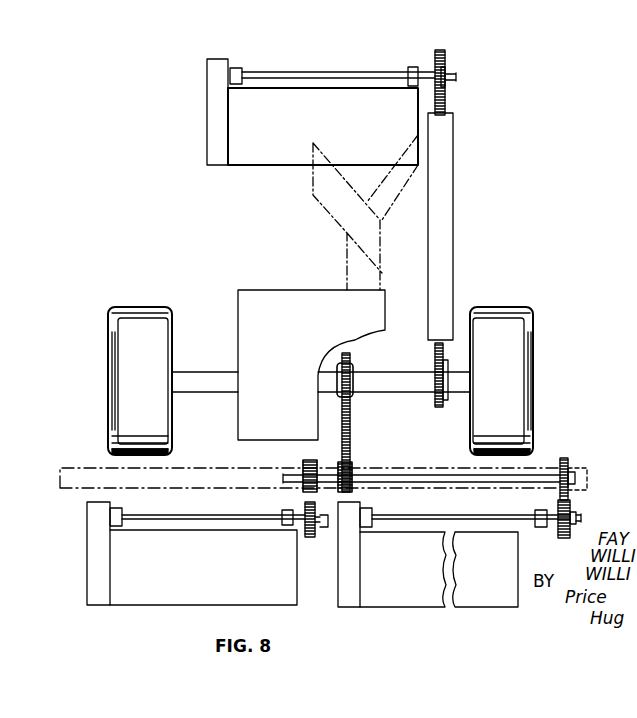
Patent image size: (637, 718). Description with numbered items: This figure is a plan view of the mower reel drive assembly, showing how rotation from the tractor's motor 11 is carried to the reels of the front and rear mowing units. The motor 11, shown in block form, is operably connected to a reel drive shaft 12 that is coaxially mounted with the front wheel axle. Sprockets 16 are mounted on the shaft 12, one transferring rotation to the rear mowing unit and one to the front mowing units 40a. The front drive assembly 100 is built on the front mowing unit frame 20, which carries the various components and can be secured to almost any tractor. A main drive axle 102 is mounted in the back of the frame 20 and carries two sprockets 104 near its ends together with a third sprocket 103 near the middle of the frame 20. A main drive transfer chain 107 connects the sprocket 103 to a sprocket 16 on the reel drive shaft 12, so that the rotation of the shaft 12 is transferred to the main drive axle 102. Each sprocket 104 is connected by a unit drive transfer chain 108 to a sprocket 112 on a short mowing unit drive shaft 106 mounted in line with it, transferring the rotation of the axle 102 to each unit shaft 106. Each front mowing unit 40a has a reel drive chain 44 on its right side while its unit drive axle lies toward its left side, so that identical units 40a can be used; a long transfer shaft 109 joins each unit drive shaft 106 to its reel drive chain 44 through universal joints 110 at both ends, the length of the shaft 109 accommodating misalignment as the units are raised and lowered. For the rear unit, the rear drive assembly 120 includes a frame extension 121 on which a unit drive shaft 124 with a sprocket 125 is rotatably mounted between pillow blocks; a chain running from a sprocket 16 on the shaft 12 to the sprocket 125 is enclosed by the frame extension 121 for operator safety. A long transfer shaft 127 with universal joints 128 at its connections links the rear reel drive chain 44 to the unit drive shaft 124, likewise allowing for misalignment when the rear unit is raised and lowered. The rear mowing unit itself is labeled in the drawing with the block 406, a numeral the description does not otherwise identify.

The motor 11 is at (290, 359).
The reel drive shaft 12 is at (407, 383).
The sprockets 16 is at (353, 366).
The front mowing unit frame 20 is at (70, 473).
The front mowing units 40a is at (182, 596).
The reel drive chain 44 is at (212, 115).
The front drive assembly 100 is at (368, 372).
The main drive axle 102 is at (532, 478).
The third sprocket 103 is at (360, 460).
The sprockets 104 is at (303, 465).
The mowing unit drive shaft 106 is at (327, 527).
The main drive transfer chain 107 is at (350, 430).
The unit drive transfer chain 108 is at (305, 502).
The transfer shaft 109 is at (165, 517).
The universal joint 110 is at (122, 512).
The sprocket 112 is at (307, 545).
The rear drive assembly 120 is at (500, 180).
The frame extension 121 is at (448, 155).
The unit drive shaft 124 is at (450, 77).
The sprocket 125 is at (443, 53).
The transfer shaft 127 is at (307, 72).
The universal joints 128 is at (240, 67).
The container 406 is at (345, 127).